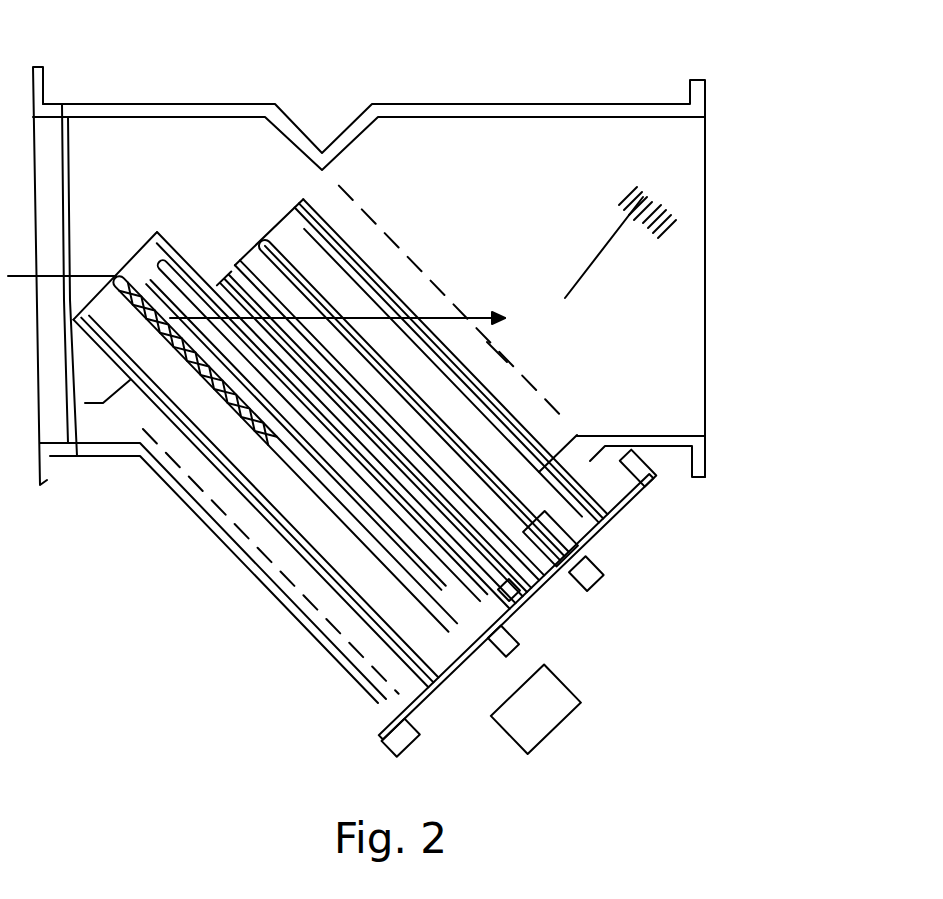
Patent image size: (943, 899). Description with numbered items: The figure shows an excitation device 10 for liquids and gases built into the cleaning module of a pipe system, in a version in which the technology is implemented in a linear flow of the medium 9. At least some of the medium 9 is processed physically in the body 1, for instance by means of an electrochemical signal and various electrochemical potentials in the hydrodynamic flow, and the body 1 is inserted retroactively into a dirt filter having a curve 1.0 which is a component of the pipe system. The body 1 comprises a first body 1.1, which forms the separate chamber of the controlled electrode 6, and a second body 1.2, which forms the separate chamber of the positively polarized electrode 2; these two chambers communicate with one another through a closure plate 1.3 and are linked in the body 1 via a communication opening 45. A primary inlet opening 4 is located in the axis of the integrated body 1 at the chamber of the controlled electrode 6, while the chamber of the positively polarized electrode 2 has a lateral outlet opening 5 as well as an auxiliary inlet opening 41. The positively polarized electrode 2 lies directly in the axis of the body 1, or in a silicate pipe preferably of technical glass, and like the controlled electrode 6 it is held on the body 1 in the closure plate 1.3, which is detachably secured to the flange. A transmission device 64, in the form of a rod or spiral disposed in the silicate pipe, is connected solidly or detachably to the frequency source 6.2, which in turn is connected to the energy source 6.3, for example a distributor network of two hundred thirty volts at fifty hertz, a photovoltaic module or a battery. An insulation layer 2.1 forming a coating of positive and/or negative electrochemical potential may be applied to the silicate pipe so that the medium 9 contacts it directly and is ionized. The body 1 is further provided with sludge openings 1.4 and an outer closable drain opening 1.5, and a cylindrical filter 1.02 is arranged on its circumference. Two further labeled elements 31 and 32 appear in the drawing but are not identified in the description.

The body 1 is at (540, 408).
The curve 1.0 is at (45, 455).
The cylindrical filter 1.02 is at (507, 353).
The first body 1.1 is at (335, 637).
The second body 1.2 is at (580, 433).
The closure plate 1.3 is at (415, 740).
The sludge openings 1.4 is at (522, 642).
The outer closable drain opening 1.5 is at (392, 712).
The excitation device 10 is at (625, 505).
The positively polarized electrode 2 is at (380, 353).
The insulation layer 2.1 is at (558, 605).
The body bottom wall 31 is at (88, 318).
The tube end face 32 is at (262, 243).
The primary inlet opening 4 is at (190, 290).
The auxiliary inlet opening 41 is at (268, 250).
The communication opening 45 is at (350, 235).
The lateral outlet opening 5 is at (505, 318).
The controlled electrode 6 is at (228, 292).
The frequency source 6.2 is at (540, 642).
The energy source 6.3 is at (578, 702).
The transmission device 64 is at (275, 440).
The medium 9 is at (660, 193).